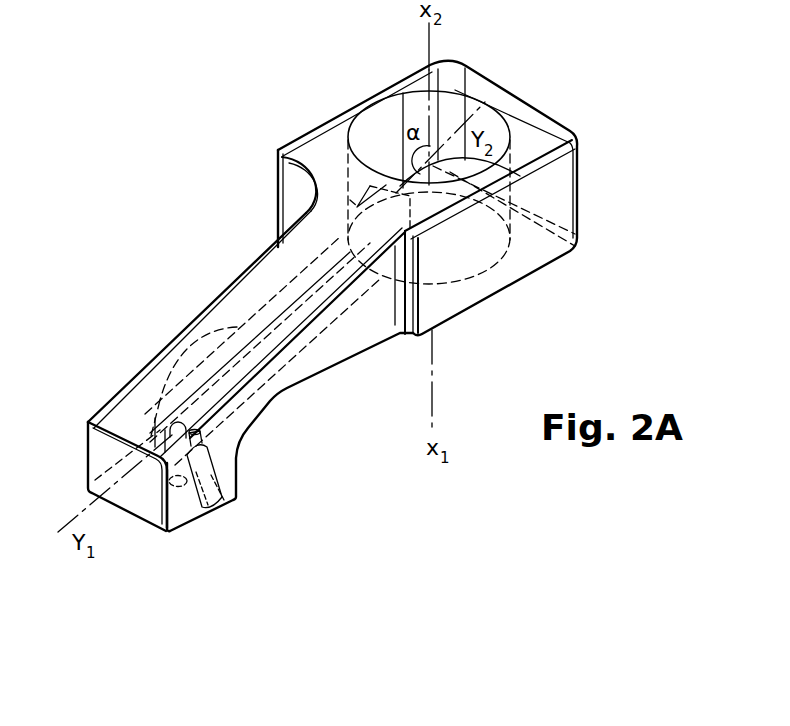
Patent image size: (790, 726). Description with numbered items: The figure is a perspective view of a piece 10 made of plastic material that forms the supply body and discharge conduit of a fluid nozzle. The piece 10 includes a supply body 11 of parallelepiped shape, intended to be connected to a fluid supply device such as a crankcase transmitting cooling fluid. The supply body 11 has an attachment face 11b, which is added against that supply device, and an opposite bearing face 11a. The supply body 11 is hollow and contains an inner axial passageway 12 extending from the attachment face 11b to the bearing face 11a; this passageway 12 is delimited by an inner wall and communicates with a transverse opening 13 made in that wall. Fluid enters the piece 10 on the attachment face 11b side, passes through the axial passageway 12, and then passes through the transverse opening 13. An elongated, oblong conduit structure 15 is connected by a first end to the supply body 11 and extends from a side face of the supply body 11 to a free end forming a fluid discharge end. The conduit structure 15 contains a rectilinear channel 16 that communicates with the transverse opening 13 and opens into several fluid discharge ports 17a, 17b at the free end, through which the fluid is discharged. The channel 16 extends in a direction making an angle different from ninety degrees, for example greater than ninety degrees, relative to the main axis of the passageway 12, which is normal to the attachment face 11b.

The piece 10 is at (327, 110).
The supply body 11 is at (558, 187).
The bearing face 11a is at (541, 140).
The attachment face 11b is at (558, 260).
The inner axial passageway 12 is at (482, 117).
The transverse opening 13 is at (350, 206).
The conduit structure 15 is at (175, 328).
The channel 16 is at (242, 357).
The fluid discharge port 17a is at (140, 480).
The fluid discharge port 17b is at (203, 493).